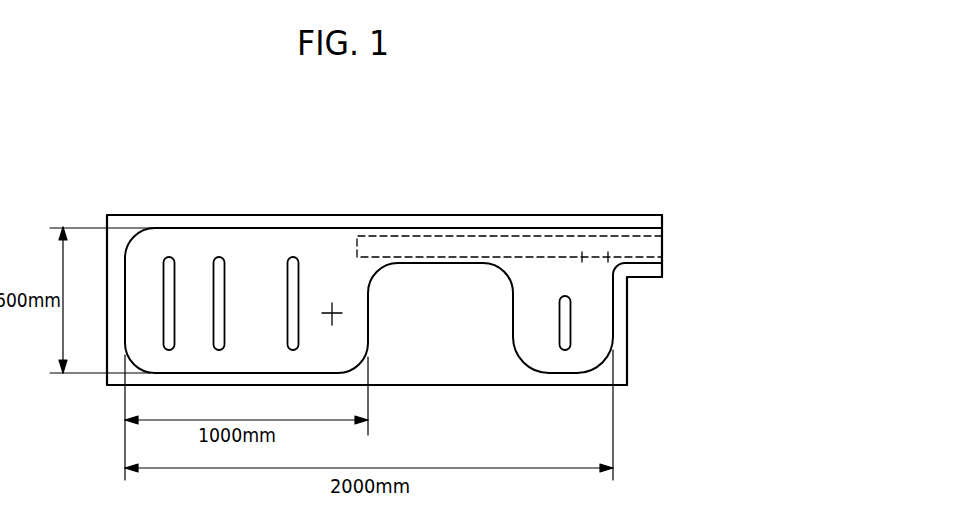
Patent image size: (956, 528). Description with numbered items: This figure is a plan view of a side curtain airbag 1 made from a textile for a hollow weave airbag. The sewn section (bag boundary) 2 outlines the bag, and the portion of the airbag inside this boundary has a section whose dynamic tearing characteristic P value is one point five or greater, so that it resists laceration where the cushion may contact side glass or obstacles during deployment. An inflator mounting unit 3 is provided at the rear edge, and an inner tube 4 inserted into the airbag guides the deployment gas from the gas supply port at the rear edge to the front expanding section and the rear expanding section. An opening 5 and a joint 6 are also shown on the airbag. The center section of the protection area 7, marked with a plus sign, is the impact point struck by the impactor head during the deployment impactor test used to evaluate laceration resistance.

The side curtain airbag 1 is at (162, 205).
The sewn section (bag boundary) 2 is at (253, 228).
The inflator mounting unit 3 is at (646, 284).
The inner tube 4 is at (665, 242).
The opening 5 is at (357, 242).
The joint 6 is at (169, 257).
The center section of protection area 7 is at (336, 311).